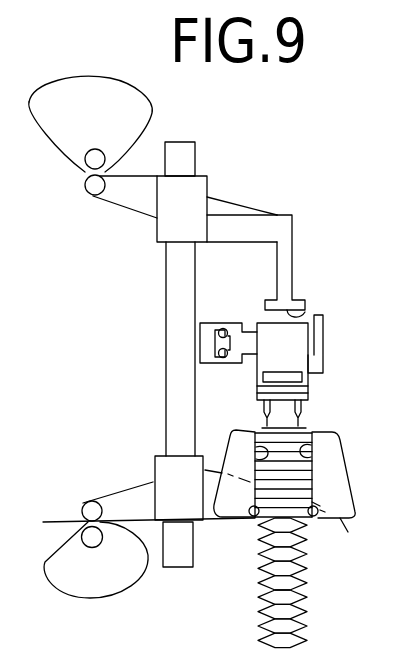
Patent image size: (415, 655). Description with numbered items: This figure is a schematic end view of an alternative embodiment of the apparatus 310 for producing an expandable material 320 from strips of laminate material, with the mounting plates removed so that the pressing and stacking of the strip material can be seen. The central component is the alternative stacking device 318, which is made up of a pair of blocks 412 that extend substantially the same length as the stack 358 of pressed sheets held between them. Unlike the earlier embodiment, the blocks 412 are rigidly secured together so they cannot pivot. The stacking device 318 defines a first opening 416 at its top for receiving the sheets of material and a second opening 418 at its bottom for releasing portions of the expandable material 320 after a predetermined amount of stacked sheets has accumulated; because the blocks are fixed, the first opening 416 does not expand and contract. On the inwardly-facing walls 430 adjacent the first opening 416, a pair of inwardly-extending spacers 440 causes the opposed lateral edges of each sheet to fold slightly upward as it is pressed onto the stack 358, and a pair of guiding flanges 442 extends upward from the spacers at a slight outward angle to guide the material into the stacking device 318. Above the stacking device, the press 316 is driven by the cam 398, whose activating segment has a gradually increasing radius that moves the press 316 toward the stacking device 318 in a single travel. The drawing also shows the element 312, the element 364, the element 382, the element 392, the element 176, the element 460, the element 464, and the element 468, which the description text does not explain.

The apparatus 310 is at (247, 125).
The vertical column 312 is at (165, 313).
The press 316 is at (283, 215).
The stacking device 318 is at (341, 528).
The expandable material 320 is at (302, 620).
The stack 358 is at (320, 490).
The nozzle 364 is at (257, 405).
The foot lip 382 is at (300, 316).
The upper support block 392 is at (197, 190).
The cam 398 is at (108, 80).
The label applicator head 176 is at (322, 322).
The blocks 412 is at (320, 477).
The first opening 416 is at (304, 422).
The second opening 418 is at (297, 520).
The inwardly-facing walls 430 is at (254, 462).
The inwardly-extending spacers 440 is at (252, 432).
The guiding flanges 442 is at (254, 429).
The lower support block 460 is at (207, 511).
The mounting bracket 464 is at (167, 510).
The lower hopper 468 is at (107, 578).